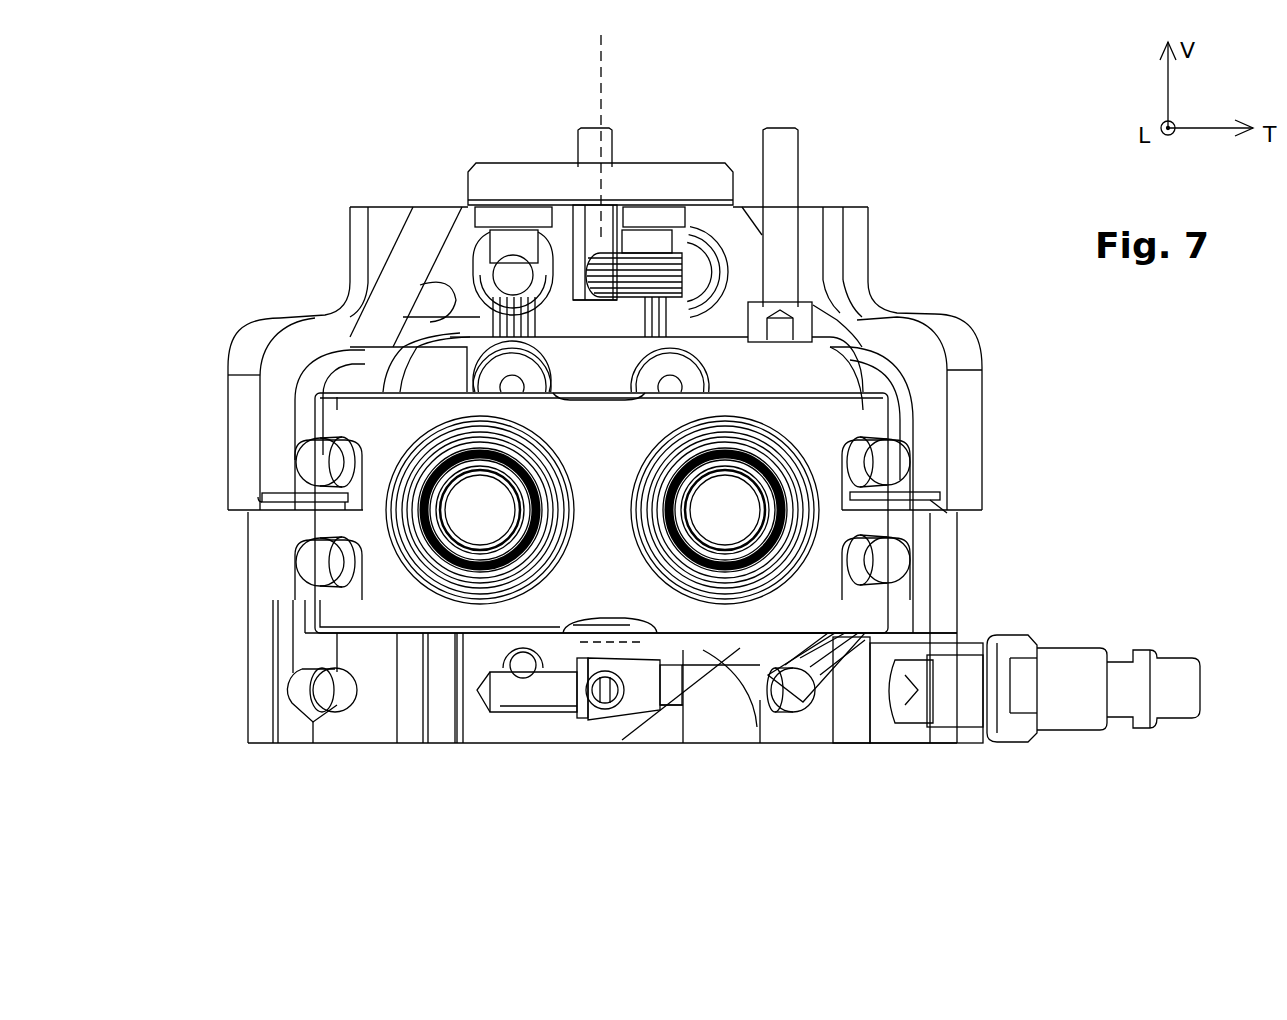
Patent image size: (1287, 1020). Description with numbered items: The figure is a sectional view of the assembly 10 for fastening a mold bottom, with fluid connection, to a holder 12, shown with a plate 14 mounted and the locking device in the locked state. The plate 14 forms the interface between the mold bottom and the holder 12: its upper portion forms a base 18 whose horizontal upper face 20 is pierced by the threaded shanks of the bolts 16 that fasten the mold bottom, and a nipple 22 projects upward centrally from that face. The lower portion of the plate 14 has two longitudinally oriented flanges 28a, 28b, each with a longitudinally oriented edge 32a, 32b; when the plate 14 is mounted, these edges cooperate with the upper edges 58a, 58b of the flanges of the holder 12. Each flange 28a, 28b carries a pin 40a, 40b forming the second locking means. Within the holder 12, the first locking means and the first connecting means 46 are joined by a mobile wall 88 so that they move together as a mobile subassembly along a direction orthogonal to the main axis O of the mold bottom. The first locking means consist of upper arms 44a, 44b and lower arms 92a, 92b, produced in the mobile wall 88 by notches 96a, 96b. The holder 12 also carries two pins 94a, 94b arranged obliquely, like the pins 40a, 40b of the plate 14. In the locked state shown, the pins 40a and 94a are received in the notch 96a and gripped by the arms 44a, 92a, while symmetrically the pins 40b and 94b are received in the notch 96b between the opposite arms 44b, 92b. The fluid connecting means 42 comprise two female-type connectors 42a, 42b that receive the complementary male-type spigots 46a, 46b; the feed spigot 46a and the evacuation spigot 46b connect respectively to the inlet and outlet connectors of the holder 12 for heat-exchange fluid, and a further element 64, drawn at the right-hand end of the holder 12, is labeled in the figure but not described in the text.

The assembly 10 is at (292, 165).
The holder 12 is at (362, 717).
The plate 14 is at (853, 263).
The bolts 16 is at (582, 145).
The base 18 is at (365, 247).
The horizontal upper face 20 is at (393, 205).
The nipple 22 is at (687, 188).
The flange 28a is at (958, 395).
The flange 28b is at (240, 398).
The longitudinal edge 32a is at (983, 528).
The longitudinal edge 32b is at (232, 513).
The pin 40a is at (860, 462).
The pin 40b is at (340, 463).
The fluid connecting means 42 is at (405, 565).
The female-type connector 42a is at (755, 600).
The female-type connector 42b is at (477, 600).
The arm 44a is at (865, 413).
The arm 44b is at (315, 364).
The first connecting means 46 is at (805, 702).
The feed spigot 46a is at (735, 560).
The evacuation spigot 46b is at (470, 553).
The upper edge 58a is at (933, 503).
The upper edge 58b is at (273, 502).
The fitting 64 is at (1070, 700).
The mobile wall 88 is at (595, 600).
The arm 92a is at (862, 607).
The arm 92b is at (333, 608).
The pin 94a is at (860, 562).
The pin 94b is at (337, 565).
The notch 96a is at (863, 500).
The notch 96b is at (337, 545).
The main axis O is at (601, 70).